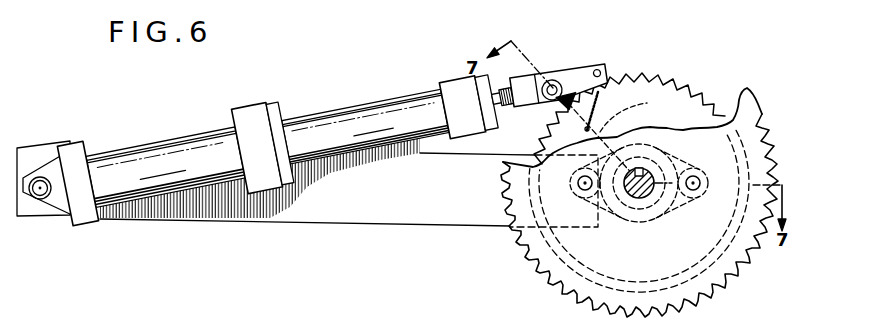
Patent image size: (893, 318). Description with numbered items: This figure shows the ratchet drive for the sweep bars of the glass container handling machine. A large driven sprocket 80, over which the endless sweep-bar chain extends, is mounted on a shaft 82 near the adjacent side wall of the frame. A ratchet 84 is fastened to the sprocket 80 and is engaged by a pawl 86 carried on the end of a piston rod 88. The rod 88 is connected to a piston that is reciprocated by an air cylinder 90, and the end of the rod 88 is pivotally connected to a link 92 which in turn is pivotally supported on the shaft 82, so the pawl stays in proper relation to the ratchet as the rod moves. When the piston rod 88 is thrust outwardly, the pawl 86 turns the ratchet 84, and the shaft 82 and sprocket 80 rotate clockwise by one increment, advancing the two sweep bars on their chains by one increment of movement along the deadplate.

The driven sprocket 80 is at (740, 112).
The shaft 82 is at (639, 200).
The ratchet 84 is at (647, 92).
The pawl 86 is at (577, 73).
The piston rod 88 is at (496, 116).
The air cylinder 90 is at (272, 99).
The link 92 is at (616, 112).